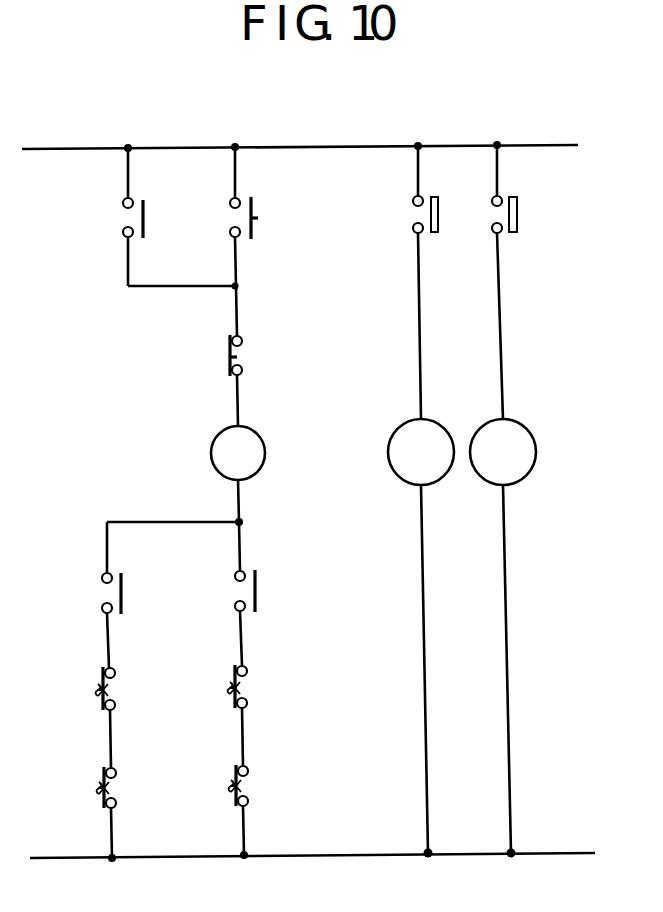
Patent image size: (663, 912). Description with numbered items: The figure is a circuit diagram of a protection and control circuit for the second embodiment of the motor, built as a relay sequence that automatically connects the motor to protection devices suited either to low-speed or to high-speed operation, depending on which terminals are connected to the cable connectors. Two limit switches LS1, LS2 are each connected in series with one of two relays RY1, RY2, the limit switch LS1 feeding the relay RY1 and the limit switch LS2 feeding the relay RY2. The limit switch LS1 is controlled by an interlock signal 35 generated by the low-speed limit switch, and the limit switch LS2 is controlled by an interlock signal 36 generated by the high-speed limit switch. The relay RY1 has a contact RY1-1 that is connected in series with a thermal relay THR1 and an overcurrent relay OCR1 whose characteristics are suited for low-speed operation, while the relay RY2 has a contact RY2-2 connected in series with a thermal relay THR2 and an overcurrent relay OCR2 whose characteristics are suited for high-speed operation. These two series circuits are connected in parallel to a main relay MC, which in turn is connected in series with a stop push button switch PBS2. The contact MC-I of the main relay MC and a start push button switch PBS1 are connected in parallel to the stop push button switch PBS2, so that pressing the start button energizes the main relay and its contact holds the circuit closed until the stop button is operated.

The interlock signal 35 is at (418, 282).
The interlock signal 36 is at (554, 282).
The limit switch LS1 is at (404, 218).
The limit switch LS2 is at (527, 282).
The contact of main relay MC-I is at (179, 217).
The start push button switch PBS1 is at (275, 193).
The stop push button switch PBS2 is at (272, 355).
The main relay MC is at (238, 453).
The contact of relay RY1 RY1-1 is at (148, 593).
The contact of relay RY2 RY2-2 is at (285, 591).
The thermal relay THR1 is at (138, 688).
The thermal relay THR2 is at (273, 686).
The overcurrent relay OCR1 is at (140, 787).
The overcurrent relay OCR2 is at (274, 785).
The relay RY1 is at (421, 452).
The relay RY2 is at (503, 452).